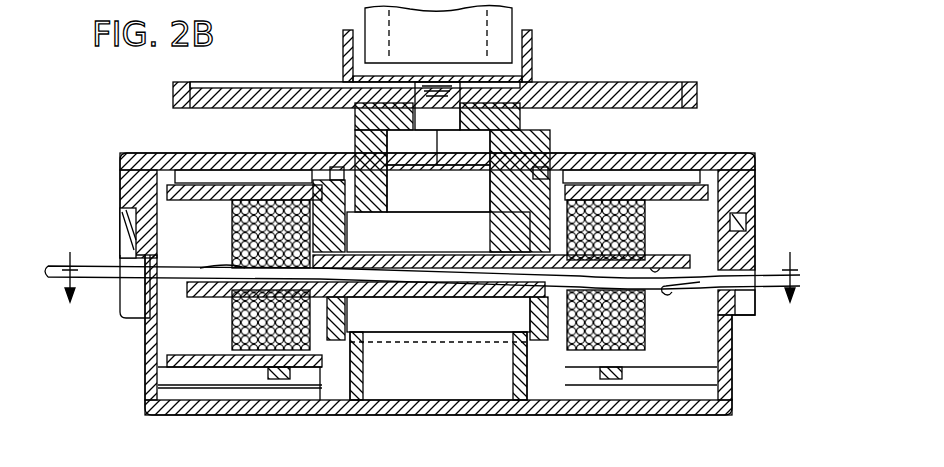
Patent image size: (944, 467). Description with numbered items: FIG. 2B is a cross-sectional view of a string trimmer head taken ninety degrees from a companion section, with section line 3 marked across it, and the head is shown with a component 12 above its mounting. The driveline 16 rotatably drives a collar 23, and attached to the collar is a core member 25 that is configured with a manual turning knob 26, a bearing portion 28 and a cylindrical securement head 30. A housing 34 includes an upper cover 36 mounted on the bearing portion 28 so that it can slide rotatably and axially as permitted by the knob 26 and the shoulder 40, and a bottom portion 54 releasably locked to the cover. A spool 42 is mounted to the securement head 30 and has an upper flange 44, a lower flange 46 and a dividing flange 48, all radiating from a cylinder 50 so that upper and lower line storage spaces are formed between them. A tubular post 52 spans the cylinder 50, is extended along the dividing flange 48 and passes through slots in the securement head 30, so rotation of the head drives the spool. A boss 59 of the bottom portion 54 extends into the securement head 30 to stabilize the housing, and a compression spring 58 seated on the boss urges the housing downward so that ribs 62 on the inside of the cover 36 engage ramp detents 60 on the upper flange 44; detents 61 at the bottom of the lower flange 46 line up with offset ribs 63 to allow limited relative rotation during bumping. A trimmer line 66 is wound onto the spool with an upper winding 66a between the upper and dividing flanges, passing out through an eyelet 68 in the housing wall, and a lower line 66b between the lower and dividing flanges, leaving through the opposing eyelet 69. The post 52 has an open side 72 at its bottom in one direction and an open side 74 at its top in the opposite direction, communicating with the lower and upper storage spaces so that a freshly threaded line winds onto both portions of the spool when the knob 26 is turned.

The component mounted on flange 12 is at (360, 18).
The driveline 16 is at (487, 70).
The collar 23 is at (533, 42).
The core member 25 is at (525, 108).
The manual turning knob 26 is at (690, 95).
The bearing portion 28 is at (525, 140).
The securement head 30 is at (348, 318).
The housing 34 is at (140, 411).
The upper cover 36 is at (200, 155).
The shoulder 40 is at (337, 167).
The spool 42 is at (175, 368).
The upper flange 44 is at (167, 187).
The lower flange 46 is at (190, 357).
The dividing flange 48 is at (120, 310).
The cylinder 50 is at (347, 233).
The tubular post 52 is at (455, 252).
The bottom portion 54 is at (735, 360).
The compression spring 58 is at (318, 380).
The boss 59 is at (365, 350).
The ramp detents 60 is at (636, 159).
The detents 61 is at (278, 385).
The ribs 62 is at (266, 170).
The ribs 63 is at (215, 400).
The trimmer line 66 is at (498, 275).
The upper winding 66a is at (118, 268).
The lower line 66b is at (240, 322).
The eyelet 68 is at (135, 240).
The opposing eyelet 69 is at (740, 232).
The open side 72 is at (222, 276).
The open side 74 is at (655, 270).
The section line 3- 3 is at (428, 274).